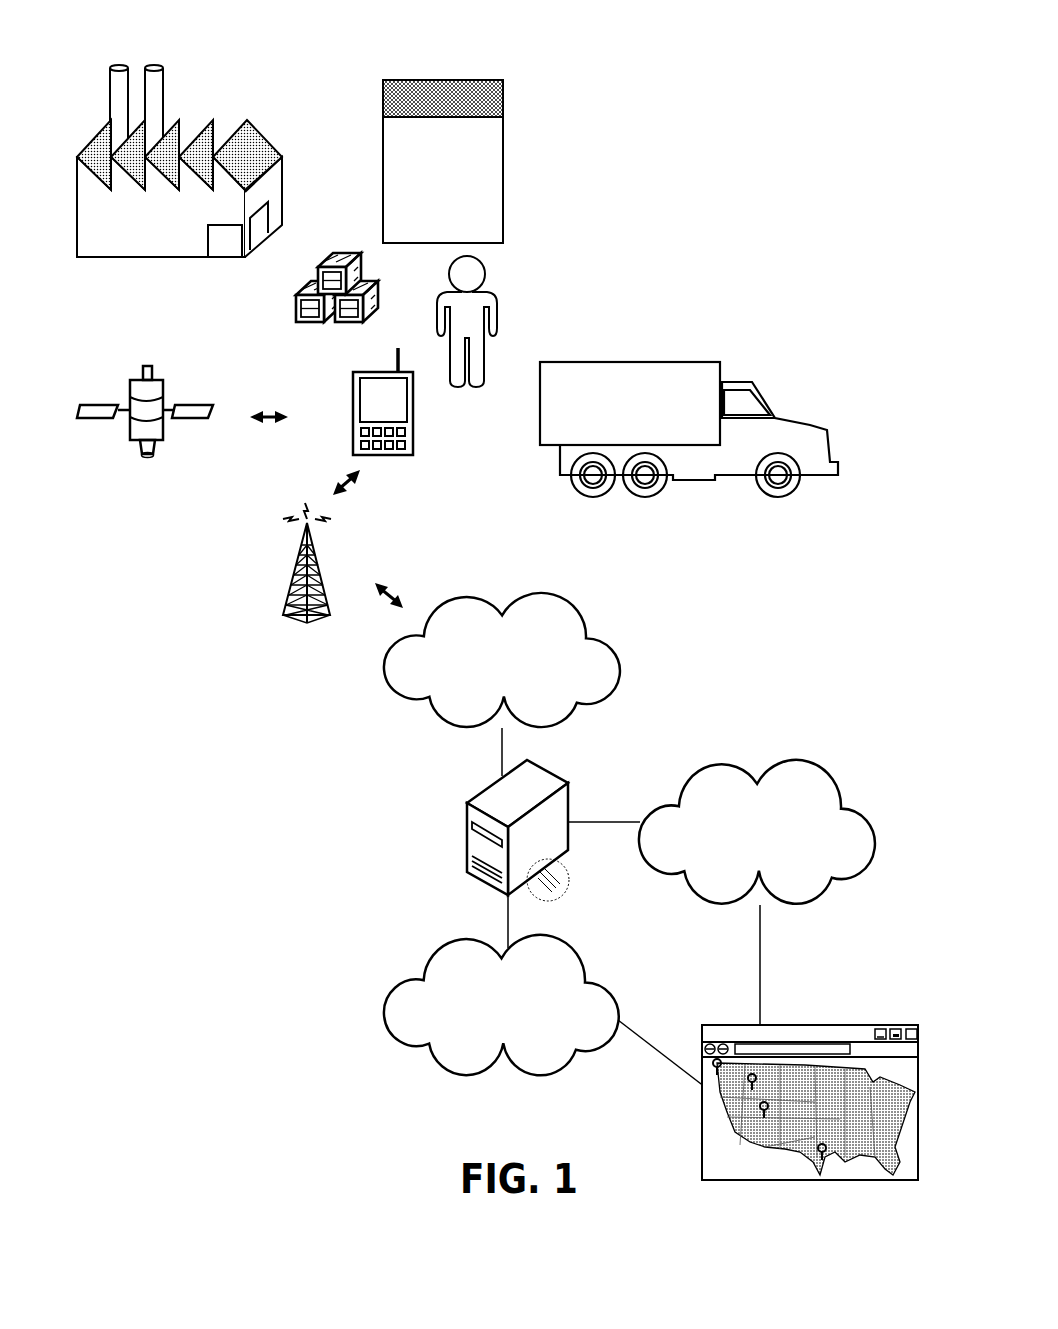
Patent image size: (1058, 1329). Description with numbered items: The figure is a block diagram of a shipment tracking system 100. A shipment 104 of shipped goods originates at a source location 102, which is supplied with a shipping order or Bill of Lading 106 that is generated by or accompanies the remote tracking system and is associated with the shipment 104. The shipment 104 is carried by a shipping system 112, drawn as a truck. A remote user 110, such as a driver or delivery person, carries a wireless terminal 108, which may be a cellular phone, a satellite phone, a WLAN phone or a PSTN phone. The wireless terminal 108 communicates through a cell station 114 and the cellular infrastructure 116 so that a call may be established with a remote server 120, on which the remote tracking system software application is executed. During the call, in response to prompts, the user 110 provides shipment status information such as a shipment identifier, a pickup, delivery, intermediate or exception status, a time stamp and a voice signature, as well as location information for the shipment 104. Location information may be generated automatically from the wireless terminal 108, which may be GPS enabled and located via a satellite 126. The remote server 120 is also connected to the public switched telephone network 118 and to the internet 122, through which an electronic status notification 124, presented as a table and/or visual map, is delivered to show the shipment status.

The shipment tracking system 100 is at (723, 122).
The source location 102 is at (247, 120).
The shipped goods or shipment 104 is at (296, 318).
The shipping order or Bill of Lading (BOL) 106 is at (503, 80).
The wireless terminal or device 108 is at (357, 440).
The remote user (driver or delivery personnel) 110 is at (499, 301).
The shipping system 112 is at (720, 363).
The cell station 114 is at (305, 626).
The cellular infrastructure 116 is at (502, 660).
The public switched telephone network (PSTN) 118 is at (757, 832).
The remote server 120 is at (467, 845).
The internet 122 is at (501, 1005).
The electronic status notification 124 is at (866, 1025).
The satellite 126 is at (143, 475).